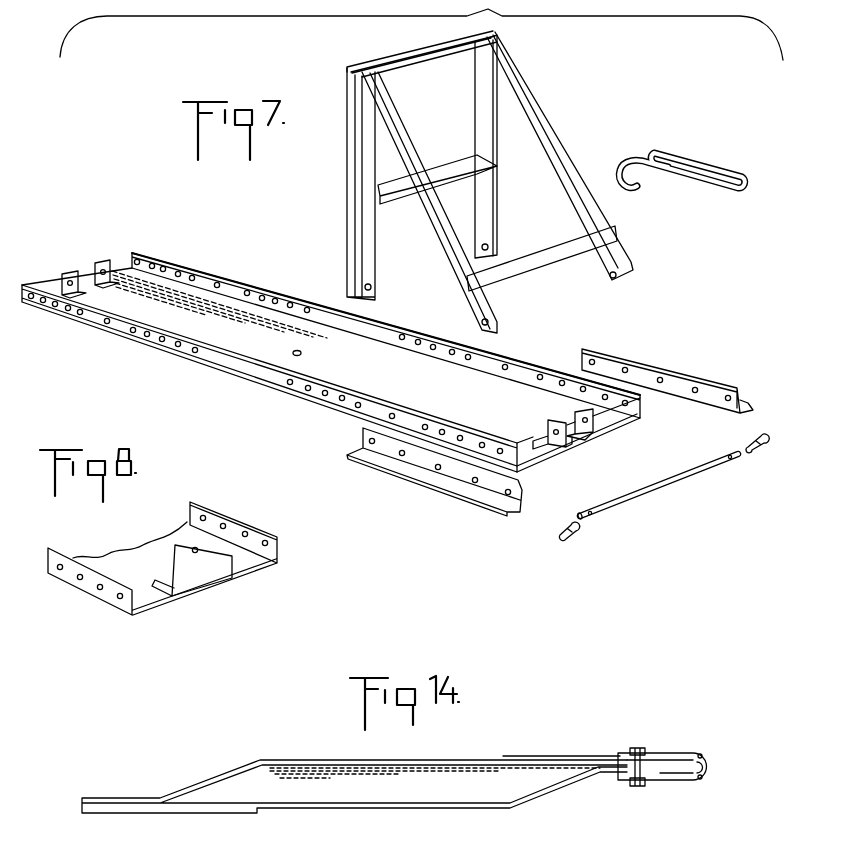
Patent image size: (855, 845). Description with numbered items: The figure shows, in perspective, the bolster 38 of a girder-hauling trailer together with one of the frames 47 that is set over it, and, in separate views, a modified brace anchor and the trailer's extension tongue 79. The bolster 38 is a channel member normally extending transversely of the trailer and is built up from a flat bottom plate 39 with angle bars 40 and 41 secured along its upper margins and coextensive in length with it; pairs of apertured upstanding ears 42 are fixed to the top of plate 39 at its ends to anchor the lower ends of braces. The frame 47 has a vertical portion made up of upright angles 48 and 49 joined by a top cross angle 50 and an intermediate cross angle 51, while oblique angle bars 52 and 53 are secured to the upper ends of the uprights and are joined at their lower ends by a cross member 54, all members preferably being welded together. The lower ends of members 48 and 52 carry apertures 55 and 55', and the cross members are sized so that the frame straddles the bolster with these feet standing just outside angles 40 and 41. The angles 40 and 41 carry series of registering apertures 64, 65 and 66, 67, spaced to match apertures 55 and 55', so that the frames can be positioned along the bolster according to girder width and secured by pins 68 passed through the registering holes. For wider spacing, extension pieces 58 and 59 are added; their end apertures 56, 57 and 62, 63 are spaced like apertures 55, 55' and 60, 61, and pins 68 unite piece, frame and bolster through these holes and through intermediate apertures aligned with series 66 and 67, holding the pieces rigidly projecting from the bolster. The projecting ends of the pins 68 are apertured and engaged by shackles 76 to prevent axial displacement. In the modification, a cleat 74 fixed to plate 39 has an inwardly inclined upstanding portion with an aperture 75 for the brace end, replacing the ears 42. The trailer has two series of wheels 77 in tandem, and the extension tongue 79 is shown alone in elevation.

In FIG. 7, the bolster 38 is at (335, 362).
In FIG. 7, the flat bottom plate 39 is at (547, 463).
In FIG. 8, the flat bottom plate 39 is at (157, 598).
In FIG. 7, the angle bar 40 is at (272, 378).
In FIG. 7, the angle bar 41 is at (390, 354).
In FIG. 7, the ears 42 is at (100, 263).
In FIG. 7, the frame 47 is at (428, 48).
In FIG. 7, the upright angle 48 is at (347, 195).
In FIG. 7, the upright angle 49 is at (500, 147).
In FIG. 7, the top cross angle 50 is at (437, 63).
In FIG. 7, the intermediate cross angle 51 is at (447, 160).
In FIG. 7, the oblique angle bar 52 is at (430, 217).
In FIG. 7, the oblique angle bar 53 is at (565, 140).
In FIG. 7, the cross member 54 is at (538, 254).
In FIG. 7, the aperture 55 is at (389, 290).
In FIG. 7, the aperture 55' is at (510, 313).
In FIG. 7, the end aperture 56 is at (367, 442).
In FIG. 7, the end aperture 57 is at (507, 494).
In FIG. 7, the extension piece 58 is at (422, 484).
In FIG. 7, the extension piece 59 is at (667, 368).
In FIG. 7, the aperture 60 is at (488, 245).
In FIG. 7, the aperture 61 is at (617, 277).
In FIG. 7, the end aperture 62 is at (593, 358).
In FIG. 7, the end aperture 63 is at (731, 393).
In FIG. 7, the series of apertures 64 is at (327, 391).
In FIG. 7, the series of apertures 65 is at (467, 359).
In FIG. 7, the series of apertures 66 is at (501, 449).
In FIG. 7, the series of apertures 67 is at (625, 406).
In FIG. 7, the pin 68 is at (670, 483).
In FIG. 8, the cleat 74 is at (215, 569).
In FIG. 8, the aperture 75 is at (192, 548).
In FIG. 7, the shackle 76 is at (753, 449).
In FIG. 7, the series of wheels 77 is at (707, 161).
In FIG. 14, the extension tongue 79 is at (293, 767).